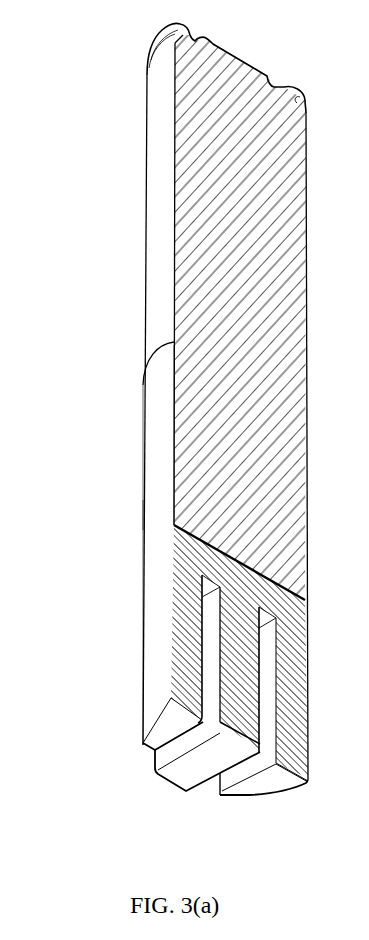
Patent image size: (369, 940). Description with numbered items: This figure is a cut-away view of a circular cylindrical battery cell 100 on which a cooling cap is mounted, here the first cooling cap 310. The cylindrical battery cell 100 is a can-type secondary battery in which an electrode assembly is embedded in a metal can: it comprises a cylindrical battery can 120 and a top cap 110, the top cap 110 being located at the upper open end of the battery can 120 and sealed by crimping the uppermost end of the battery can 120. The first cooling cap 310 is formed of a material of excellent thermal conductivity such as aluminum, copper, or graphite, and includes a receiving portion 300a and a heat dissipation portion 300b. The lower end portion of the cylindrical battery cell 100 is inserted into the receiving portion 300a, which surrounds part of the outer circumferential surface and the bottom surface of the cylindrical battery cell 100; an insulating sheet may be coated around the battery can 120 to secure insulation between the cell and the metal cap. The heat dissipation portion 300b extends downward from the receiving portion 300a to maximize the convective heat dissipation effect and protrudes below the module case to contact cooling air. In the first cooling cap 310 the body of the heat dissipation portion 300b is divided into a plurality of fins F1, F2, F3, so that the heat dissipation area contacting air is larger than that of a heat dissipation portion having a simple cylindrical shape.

The cylindrical battery cell 100 is at (108, 299).
The top cap 110 is at (238, 53).
The battery can 120 is at (157, 144).
The receiving portion 300a is at (154, 426).
The first cooling cap 310 is at (120, 516).
The heat dissipation portion 300b is at (155, 635).
The fin F1 is at (144, 748).
The fin F2 is at (178, 782).
The fin F3 is at (247, 799).